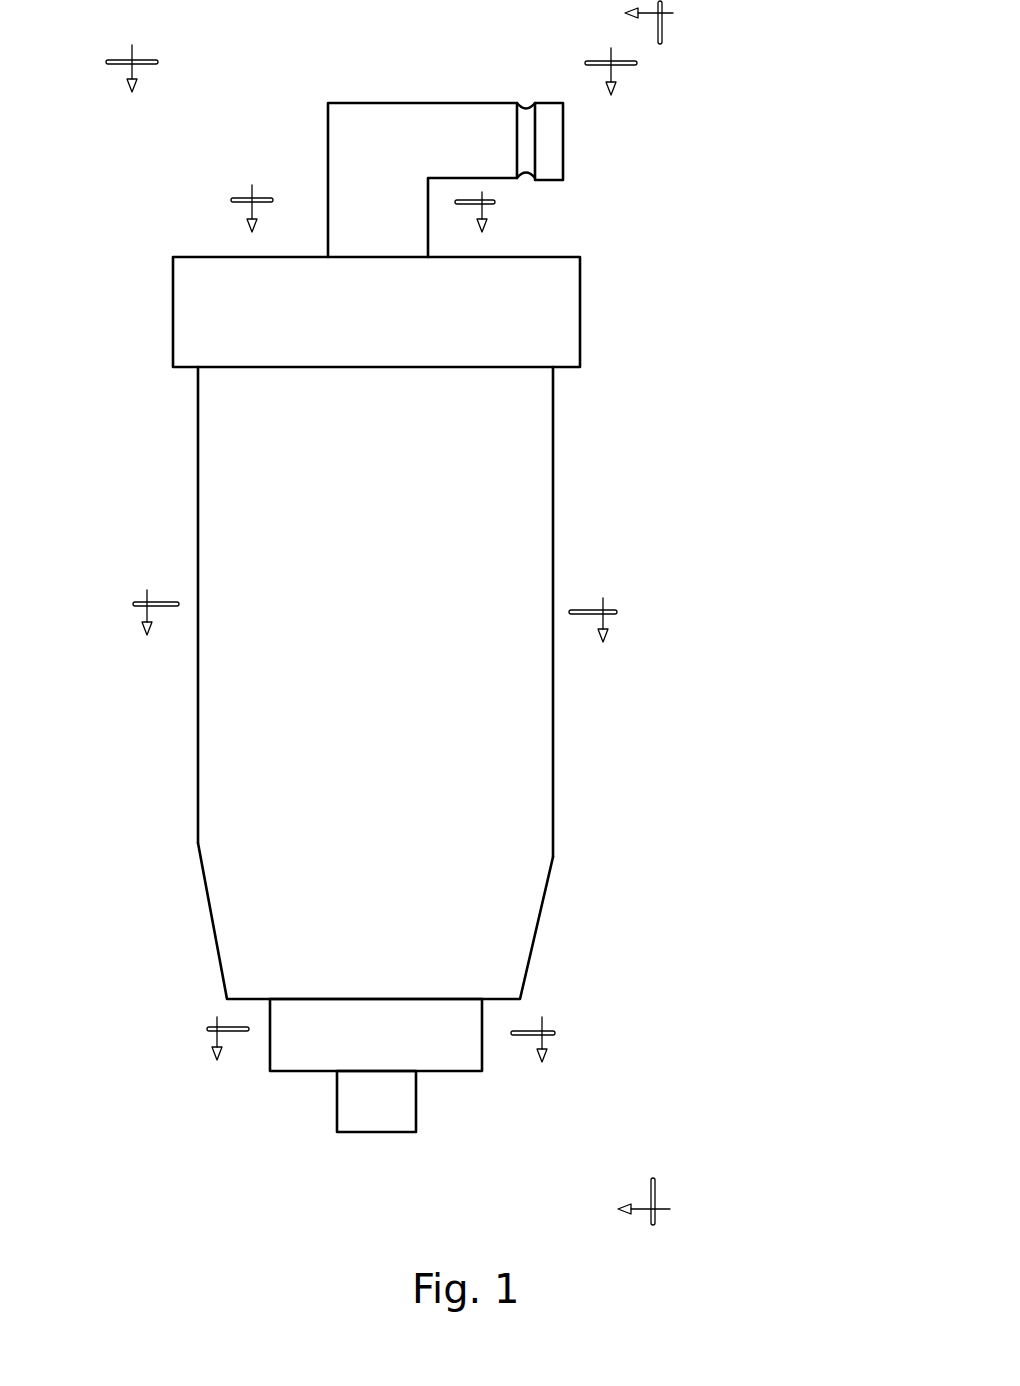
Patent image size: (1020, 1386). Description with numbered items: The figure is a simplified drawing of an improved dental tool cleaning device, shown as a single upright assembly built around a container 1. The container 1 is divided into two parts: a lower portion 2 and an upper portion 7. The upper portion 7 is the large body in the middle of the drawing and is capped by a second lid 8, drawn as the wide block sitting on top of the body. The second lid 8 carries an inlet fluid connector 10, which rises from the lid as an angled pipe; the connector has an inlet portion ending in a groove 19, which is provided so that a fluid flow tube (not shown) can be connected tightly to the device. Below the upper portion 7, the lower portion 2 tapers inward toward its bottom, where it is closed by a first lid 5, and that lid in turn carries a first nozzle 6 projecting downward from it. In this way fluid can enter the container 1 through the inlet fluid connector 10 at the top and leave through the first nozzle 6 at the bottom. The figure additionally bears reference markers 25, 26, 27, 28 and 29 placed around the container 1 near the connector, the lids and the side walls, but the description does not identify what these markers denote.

The container 1 is at (535, 548).
The lower portion 2 is at (178, 864).
The first lid 5 is at (448, 1062).
The first nozzle 6 is at (388, 1122).
The upper portion 7 is at (349, 683).
The second lid 8 is at (570, 318).
The inlet fluid connector 10 is at (423, 115).
The groove 19 is at (527, 182).
The direction arrows at inlet end 25 is at (370, 88).
The direction arrows at pipe legs 26 is at (379, 214).
The direction arrows at housing sides 27 is at (371, 636).
The direction arrows at lower chamber 28 is at (372, 1044).
The lateral direction arrows 29 is at (620, 614).